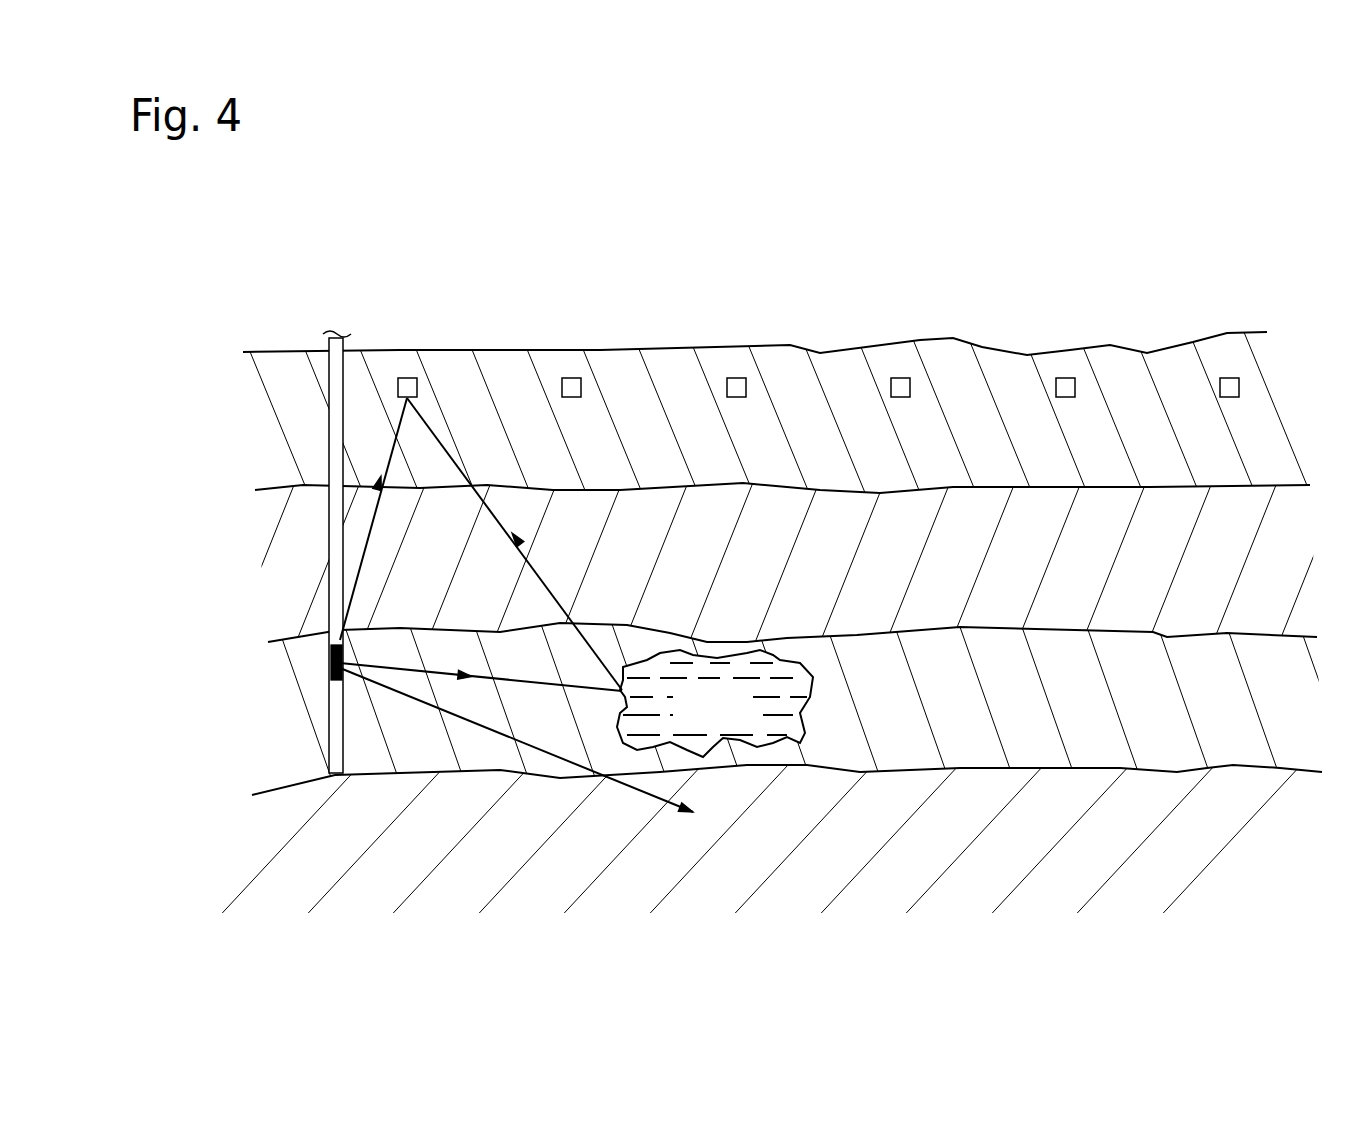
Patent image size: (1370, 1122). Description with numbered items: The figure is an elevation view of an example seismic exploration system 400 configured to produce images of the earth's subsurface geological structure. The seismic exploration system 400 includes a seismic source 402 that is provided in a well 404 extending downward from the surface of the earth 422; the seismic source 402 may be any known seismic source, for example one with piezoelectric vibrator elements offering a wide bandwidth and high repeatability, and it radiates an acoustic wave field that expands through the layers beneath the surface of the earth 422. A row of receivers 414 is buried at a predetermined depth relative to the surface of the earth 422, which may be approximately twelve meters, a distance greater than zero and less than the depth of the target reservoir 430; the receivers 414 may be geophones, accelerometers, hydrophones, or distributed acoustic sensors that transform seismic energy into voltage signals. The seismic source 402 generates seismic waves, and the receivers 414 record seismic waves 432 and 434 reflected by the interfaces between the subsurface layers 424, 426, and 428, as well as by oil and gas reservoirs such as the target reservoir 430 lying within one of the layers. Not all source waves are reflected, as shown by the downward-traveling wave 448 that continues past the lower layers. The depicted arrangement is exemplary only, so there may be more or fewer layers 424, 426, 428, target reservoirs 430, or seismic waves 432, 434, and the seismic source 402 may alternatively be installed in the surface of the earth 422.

The seismic exploration system 400 is at (1108, 189).
The seismic source 402 is at (331, 668).
The well 404 is at (333, 432).
The receivers 414 is at (408, 386).
The surface of the earth 422 is at (983, 345).
The subsurface layer 424 is at (1298, 431).
The subsurface layer 426 is at (1298, 578).
The subsurface layer 428 is at (1298, 691).
The target reservoir 430 is at (735, 717).
The seismic wave 432 is at (362, 562).
The seismic wave 434 is at (519, 684).
The downgoing wave 448 is at (616, 778).